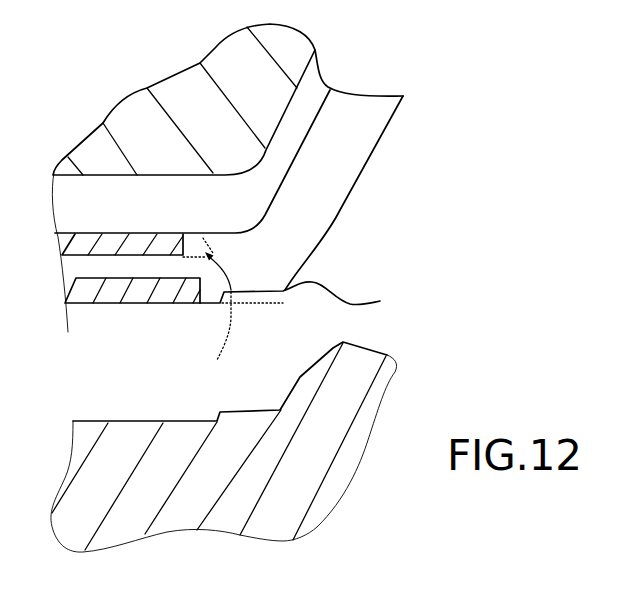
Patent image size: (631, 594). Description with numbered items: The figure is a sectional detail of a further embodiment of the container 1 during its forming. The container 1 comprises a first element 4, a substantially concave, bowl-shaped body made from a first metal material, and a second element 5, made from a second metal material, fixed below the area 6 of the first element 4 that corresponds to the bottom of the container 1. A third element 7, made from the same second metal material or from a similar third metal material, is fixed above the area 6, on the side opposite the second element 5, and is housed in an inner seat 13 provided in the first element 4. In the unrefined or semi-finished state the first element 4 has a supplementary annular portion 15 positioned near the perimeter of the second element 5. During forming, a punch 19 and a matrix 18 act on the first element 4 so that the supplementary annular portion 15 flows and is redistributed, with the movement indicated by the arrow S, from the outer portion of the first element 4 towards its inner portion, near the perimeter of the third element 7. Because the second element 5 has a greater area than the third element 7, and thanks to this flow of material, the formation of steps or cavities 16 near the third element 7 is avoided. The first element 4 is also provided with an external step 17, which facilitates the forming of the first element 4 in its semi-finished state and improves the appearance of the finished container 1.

The container 1 is at (178, 96).
The first element 4 is at (338, 155).
The second element 5 is at (132, 325).
The area 6 is at (156, 268).
The third element 7 is at (102, 252).
The inner seat 13 is at (141, 253).
The supplementary annular portion 15 is at (225, 337).
The steps or cavities 16 is at (203, 257).
The external step 17 is at (305, 296).
The matrix 18 is at (303, 472).
The punch 19 is at (107, 160).
The arrow S is at (226, 271).